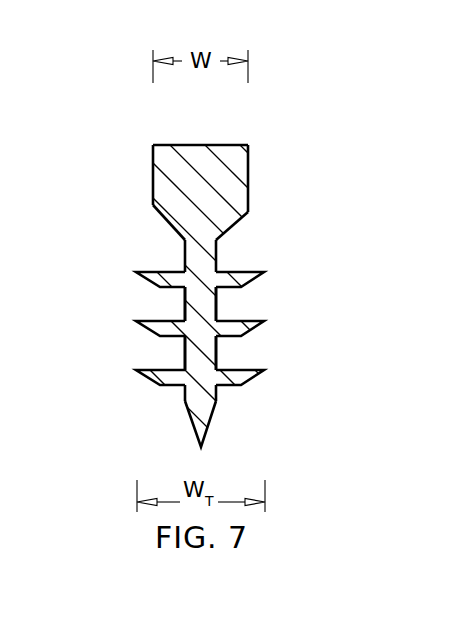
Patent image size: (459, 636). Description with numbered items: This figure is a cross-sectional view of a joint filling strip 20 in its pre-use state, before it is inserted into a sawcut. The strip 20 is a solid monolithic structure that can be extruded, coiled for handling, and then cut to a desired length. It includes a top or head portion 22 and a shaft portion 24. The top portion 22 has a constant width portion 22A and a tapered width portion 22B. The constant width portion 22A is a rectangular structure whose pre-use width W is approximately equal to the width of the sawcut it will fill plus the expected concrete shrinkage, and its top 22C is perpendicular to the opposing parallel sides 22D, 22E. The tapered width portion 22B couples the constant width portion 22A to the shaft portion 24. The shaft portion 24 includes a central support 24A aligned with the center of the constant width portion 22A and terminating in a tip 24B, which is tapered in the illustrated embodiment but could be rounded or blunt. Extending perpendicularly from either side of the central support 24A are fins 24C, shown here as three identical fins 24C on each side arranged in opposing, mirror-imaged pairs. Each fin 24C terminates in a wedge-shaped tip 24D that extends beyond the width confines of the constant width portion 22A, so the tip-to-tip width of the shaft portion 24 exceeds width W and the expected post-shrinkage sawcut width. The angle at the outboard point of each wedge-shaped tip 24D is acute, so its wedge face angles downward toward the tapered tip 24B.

The joint filling strip 20 is at (283, 67).
The top portion 22 is at (252, 145).
The constant width portion 22A is at (178, 172).
The tapered width portion 22B is at (190, 218).
The top 22C is at (199, 145).
The side 22D is at (153, 182).
The side 22E is at (250, 182).
The shaft portion 24 is at (256, 448).
The central support 24A is at (203, 343).
The tip 24B is at (206, 436).
The fins 24C is at (162, 290).
The wedge-shaped tip 24D is at (265, 272).